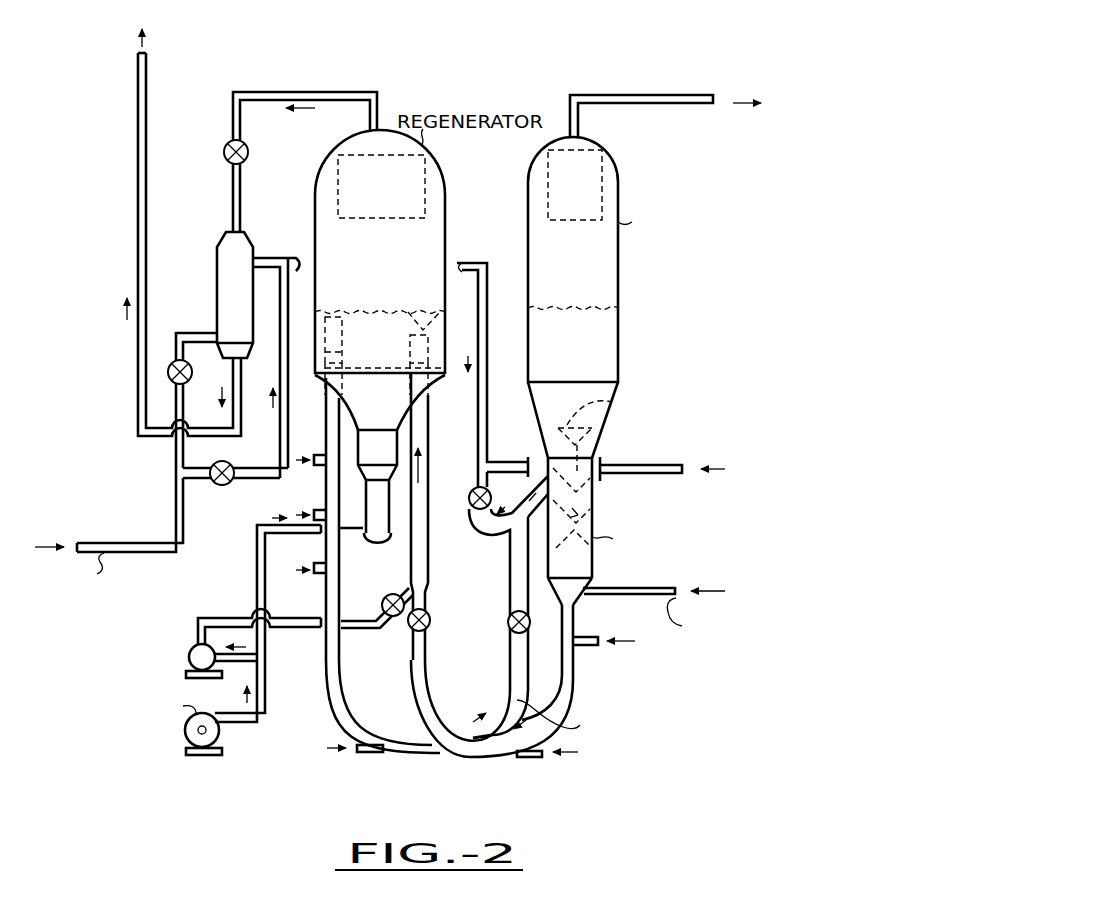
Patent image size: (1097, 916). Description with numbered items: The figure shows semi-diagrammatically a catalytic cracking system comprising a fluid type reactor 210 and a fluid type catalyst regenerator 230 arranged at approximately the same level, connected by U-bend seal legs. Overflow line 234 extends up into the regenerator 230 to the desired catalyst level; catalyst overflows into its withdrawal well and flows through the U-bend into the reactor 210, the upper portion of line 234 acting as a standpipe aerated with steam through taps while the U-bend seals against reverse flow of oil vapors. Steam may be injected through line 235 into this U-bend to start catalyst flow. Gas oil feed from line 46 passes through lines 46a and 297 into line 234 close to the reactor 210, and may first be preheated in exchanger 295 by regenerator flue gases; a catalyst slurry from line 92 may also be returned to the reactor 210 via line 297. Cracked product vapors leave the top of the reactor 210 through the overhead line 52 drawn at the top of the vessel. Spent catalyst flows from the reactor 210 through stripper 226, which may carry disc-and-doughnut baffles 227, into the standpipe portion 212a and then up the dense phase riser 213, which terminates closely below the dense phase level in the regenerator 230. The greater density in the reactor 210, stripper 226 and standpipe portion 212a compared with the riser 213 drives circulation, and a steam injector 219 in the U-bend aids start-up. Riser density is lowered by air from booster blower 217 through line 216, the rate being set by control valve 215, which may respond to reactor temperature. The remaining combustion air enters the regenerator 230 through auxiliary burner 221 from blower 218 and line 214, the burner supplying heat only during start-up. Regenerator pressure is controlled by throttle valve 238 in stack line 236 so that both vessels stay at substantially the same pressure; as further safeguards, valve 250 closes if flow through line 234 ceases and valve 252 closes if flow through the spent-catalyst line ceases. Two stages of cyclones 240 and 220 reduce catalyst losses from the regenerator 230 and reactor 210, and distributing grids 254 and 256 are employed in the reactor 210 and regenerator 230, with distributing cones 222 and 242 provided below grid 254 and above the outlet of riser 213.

The stack line 236 is at (132, 160).
The throttle valve 238 is at (248, 150).
The exchanger 295 is at (217, 270).
The line 297 is at (280, 257).
The cyclones 240 is at (407, 191).
The catalyst regenerator 230 is at (380, 280).
The distributing cone 242 is at (412, 310).
The distributing grid 256 is at (410, 350).
The cyclones 220 is at (578, 177).
The reactor 210 is at (618, 325).
The reactor product outlet line 52 is at (667, 100).
The distributing grid 254 is at (612, 408).
The distributing cone 222 is at (593, 430).
The line 92 is at (695, 463).
The stripper 226 is at (592, 518).
The disc-and-doughnut baffles 227 is at (592, 561).
The standpipe portion 212a is at (580, 617).
The dense phase riser 213 is at (428, 413).
The auxiliary burner 221 is at (390, 525).
The overflow line 234 is at (341, 570).
The line 216 is at (241, 619).
The booster blower 217 is at (188, 654).
The line 214 is at (265, 694).
The blower 218 is at (190, 765).
The line 235 is at (357, 749).
The control valve 215 is at (388, 623).
The valve 252 is at (428, 627).
The valve 250 is at (508, 620).
The steam injector 219 is at (518, 757).
The line 46 is at (140, 541).
The line 46a is at (286, 480).